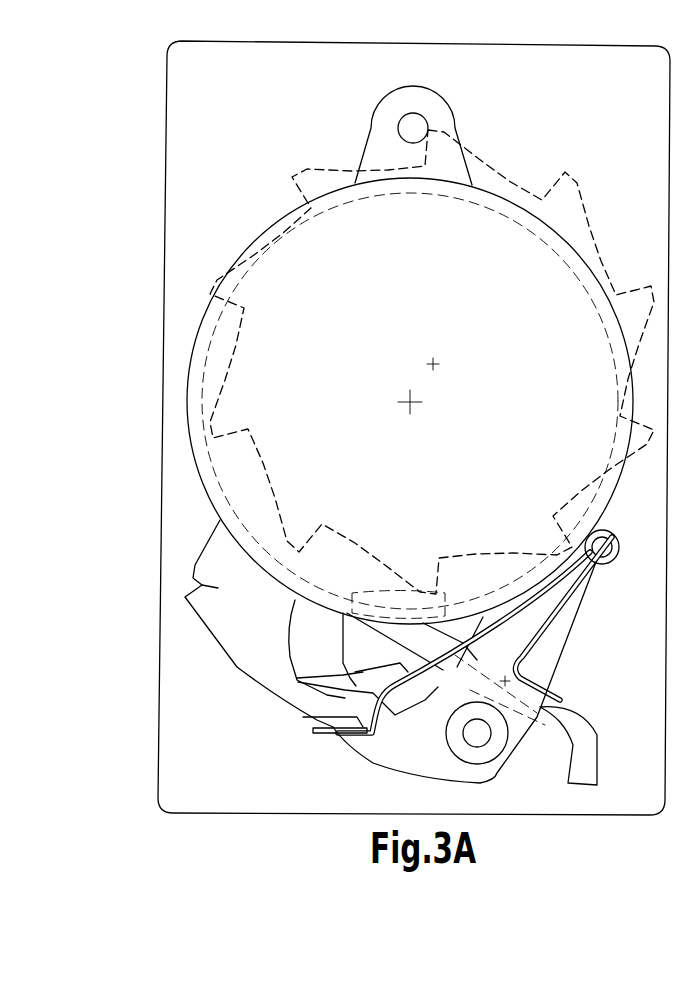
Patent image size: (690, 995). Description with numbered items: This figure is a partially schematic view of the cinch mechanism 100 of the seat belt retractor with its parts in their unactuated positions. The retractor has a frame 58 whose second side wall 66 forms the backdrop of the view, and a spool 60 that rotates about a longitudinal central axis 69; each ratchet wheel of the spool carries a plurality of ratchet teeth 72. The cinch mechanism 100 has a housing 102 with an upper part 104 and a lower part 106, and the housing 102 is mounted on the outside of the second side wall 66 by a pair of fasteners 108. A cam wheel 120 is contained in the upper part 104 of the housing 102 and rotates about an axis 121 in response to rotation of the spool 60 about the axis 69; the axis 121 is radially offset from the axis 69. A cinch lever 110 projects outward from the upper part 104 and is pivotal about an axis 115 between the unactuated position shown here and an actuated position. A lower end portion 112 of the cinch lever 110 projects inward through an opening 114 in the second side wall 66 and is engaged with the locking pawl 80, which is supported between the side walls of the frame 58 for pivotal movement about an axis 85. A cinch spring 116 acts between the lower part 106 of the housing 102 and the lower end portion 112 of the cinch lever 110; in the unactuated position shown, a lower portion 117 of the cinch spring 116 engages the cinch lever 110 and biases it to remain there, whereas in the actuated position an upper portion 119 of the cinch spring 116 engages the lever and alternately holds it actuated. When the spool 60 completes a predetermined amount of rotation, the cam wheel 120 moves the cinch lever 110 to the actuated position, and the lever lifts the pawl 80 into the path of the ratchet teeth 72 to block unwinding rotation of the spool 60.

The frame 58 is at (167, 72).
The second side wall 66 is at (185, 120).
The spool 60 is at (292, 172).
The ratchet teeth 72 is at (318, 197).
The cinch mechanism 100 is at (350, 184).
The fasteners 108 is at (415, 127).
The housing 102 is at (507, 197).
The cam wheel 120 is at (583, 193).
The upper part 104 is at (188, 405).
The axis 121 is at (406, 398).
The longitudinal central axis 69 is at (436, 365).
The axis 115 is at (285, 522).
The locking pawl 80 is at (410, 605).
The upper portion 119 is at (505, 650).
The cinch lever 110 is at (202, 585).
The opening 114 is at (350, 637).
The lower end portion 112 is at (340, 688).
The lower portion 117 is at (337, 733).
The lower part 106 is at (425, 735).
The cinch spring 116 is at (565, 633).
The axis 85 is at (545, 700).